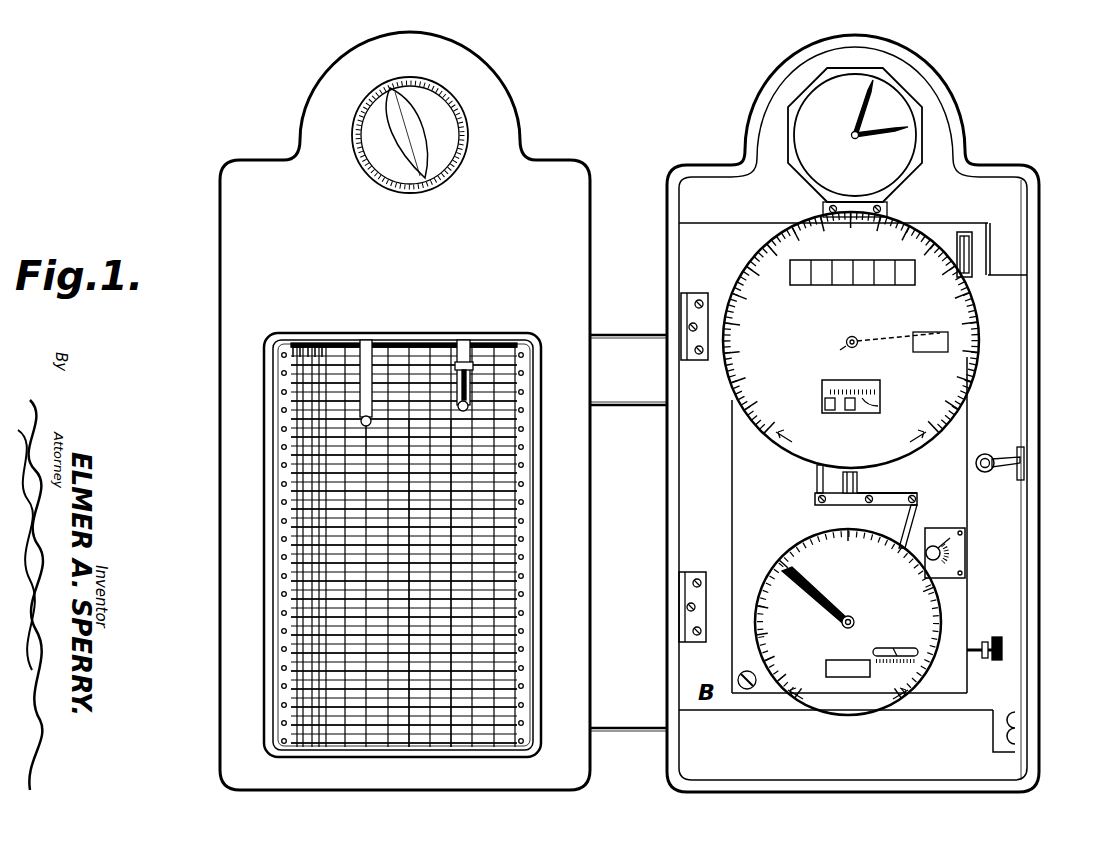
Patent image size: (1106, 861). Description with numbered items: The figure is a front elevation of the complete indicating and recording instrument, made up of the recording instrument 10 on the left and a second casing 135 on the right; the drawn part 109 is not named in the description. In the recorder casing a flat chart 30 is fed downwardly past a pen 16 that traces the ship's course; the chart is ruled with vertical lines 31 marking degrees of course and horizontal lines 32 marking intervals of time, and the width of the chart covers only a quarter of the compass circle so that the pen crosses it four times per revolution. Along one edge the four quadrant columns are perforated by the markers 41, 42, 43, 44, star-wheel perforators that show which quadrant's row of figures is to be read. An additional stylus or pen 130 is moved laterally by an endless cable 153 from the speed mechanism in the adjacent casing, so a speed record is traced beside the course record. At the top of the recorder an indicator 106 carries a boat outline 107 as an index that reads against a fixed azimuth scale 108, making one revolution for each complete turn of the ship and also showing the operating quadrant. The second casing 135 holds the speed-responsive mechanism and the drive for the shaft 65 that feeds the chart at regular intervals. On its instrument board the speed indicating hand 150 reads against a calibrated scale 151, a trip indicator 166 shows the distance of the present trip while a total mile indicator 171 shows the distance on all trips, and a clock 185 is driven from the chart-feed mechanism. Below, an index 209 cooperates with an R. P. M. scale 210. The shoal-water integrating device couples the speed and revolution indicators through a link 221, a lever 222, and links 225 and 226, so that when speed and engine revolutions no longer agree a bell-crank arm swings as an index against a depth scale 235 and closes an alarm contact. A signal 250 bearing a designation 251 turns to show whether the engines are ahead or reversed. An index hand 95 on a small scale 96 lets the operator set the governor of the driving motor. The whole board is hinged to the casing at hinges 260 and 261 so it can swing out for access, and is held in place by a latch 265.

The recording instrument 10 is at (396, 517).
The pen 16 is at (379, 397).
The chart 30 is at (403, 545).
The vertical lines 31 is at (403, 583).
The horizontal lines 32 is at (437, 540).
The marker 41 is at (299, 338).
The marker 42 is at (303, 338).
The marker 43 is at (310, 338).
The marker 44 is at (328, 336).
The shaft 65 is at (614, 726).
The index hand 95 is at (949, 540).
The scale 96 is at (965, 565).
The indicator 106 is at (396, 134).
The boat outline 107 is at (416, 124).
The azimuth scale 108 is at (457, 117).
The recorder casing 109 is at (405, 411).
The stylus or pen 130 is at (473, 387).
The second casing 135 is at (1028, 590).
The indicating hand 150 is at (851, 340).
The scale 151 is at (976, 303).
The endless cable 153 is at (622, 338).
The trip indicator 166 is at (826, 287).
The total mile indicator 171 is at (911, 350).
The clock 185 is at (855, 142).
The index 209 is at (826, 600).
The R. P. M. scale 210 is at (848, 622).
The link 221 is at (815, 478).
The lever 222 is at (903, 493).
The link 225 is at (892, 526).
The link 226 is at (872, 479).
The scale 235 is at (880, 404).
The signal 250 is at (868, 645).
The designation 251 is at (833, 680).
The hinge 260 is at (703, 362).
The hinge 261 is at (700, 570).
The latch 265 is at (998, 455).